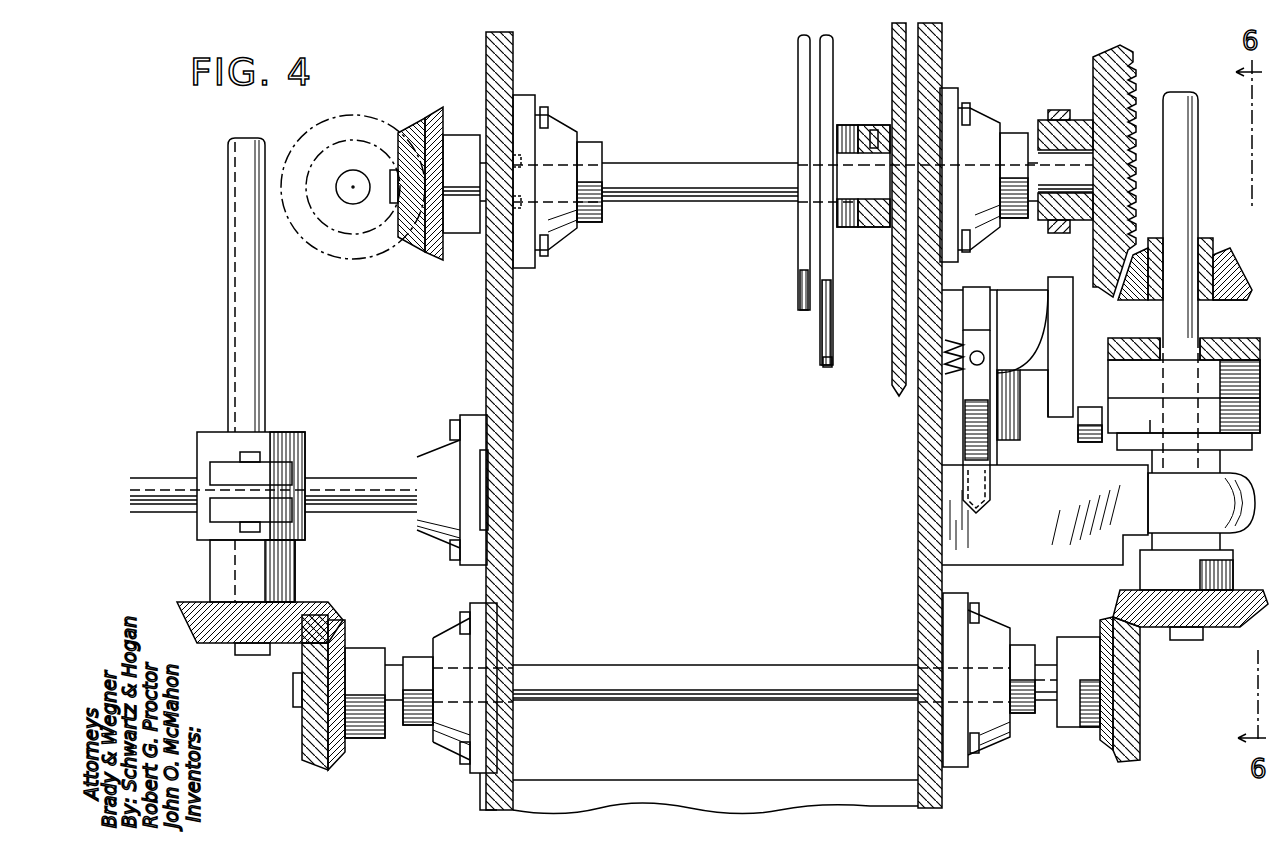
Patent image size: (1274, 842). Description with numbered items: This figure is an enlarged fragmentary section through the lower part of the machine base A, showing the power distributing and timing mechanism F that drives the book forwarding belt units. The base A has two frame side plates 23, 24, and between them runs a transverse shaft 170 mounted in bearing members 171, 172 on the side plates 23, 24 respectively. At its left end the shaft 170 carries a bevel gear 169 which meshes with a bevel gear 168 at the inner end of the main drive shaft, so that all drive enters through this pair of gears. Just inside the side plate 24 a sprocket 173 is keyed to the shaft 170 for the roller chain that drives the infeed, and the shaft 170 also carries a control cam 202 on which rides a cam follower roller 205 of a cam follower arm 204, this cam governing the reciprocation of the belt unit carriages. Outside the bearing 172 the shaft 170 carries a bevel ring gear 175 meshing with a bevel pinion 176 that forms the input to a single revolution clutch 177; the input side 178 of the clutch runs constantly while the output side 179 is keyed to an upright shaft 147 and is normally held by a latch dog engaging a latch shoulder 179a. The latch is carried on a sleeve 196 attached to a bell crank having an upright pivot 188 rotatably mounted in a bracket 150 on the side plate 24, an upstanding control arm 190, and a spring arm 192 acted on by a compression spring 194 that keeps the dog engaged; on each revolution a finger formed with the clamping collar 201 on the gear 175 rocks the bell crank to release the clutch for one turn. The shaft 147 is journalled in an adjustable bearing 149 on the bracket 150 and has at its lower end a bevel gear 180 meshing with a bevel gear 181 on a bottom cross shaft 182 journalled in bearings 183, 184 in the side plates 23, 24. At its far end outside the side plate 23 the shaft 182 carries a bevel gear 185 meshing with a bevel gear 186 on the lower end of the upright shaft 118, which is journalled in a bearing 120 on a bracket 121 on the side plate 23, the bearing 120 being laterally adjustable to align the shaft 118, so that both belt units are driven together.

The base A is at (522, 352).
The side plate 23 is at (520, 462).
The side plate 24 is at (918, 430).
The upright shaft 118 is at (267, 342).
The bearing 120 is at (306, 440).
The bracket 121 is at (470, 415).
The upright shaft 147 is at (1199, 166).
The adjustable bearing 149 is at (1252, 532).
The bracket 150 is at (1108, 565).
The bevel gear 168 is at (342, 250).
The bevel gear 169 is at (425, 255).
The transverse shaft 170 is at (672, 163).
The bearing member 171 is at (548, 118).
The bearing member 172 is at (966, 106).
The sprocket 173 is at (892, 378).
The bevel ring gear 175 is at (1120, 60).
The bevel pinion 176 is at (1242, 262).
The single revolution clutch 177 is at (1108, 362).
The input side 178 is at (1256, 340).
The output side 179 is at (1108, 385).
The latch shoulder 179a is at (1150, 428).
The bevel gear 180 is at (1245, 625).
The bevel gear 181 is at (1128, 758).
The bottom cross shaft 182 is at (762, 665).
The bearing 183 is at (452, 632).
The bearing 184 is at (985, 615).
The bevel gear 185 is at (322, 772).
The bevel gear 186 is at (320, 605).
The upright pivot 188 is at (990, 450).
The control arm 190 is at (1050, 282).
The spring arm 192 is at (985, 360).
The compression spring 194 is at (945, 372).
The sleeve 196 is at (1090, 445).
The clamping collar 201 is at (1058, 112).
The control cam 202 is at (818, 362).
The cam follower arm 204 is at (800, 268).
The cam follower roller 205 is at (815, 222).
The power distributing and timing mechanism F is at (1048, 710).